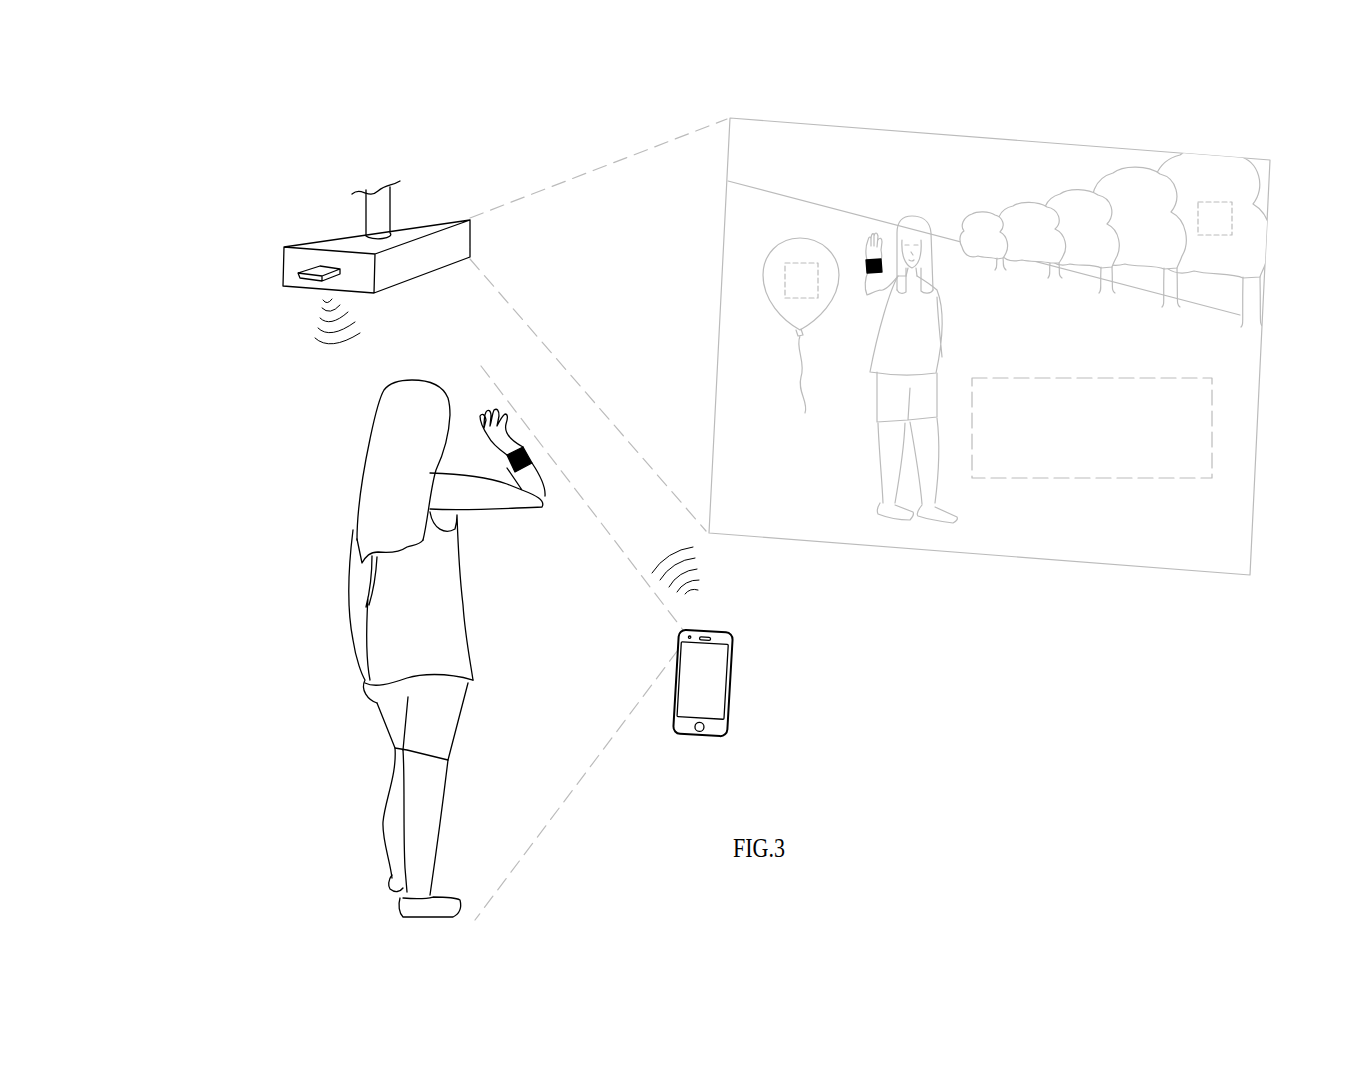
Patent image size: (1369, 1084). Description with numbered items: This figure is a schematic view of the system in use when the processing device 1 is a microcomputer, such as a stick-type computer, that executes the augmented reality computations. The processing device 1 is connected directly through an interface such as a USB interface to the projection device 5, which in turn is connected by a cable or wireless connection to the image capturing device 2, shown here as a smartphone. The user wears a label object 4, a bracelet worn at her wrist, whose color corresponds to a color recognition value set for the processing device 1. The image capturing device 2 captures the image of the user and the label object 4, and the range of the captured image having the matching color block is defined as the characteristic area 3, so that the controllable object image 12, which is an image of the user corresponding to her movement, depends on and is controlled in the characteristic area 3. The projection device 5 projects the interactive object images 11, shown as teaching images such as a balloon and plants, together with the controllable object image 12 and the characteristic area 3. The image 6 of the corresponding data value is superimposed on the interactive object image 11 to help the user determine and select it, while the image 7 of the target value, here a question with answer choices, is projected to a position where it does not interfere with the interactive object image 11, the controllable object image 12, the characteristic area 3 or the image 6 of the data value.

The processing device 1 is at (300, 275).
The image capturing device 2 is at (714, 733).
The characteristic area 3 is at (882, 260).
The label object 4 is at (507, 458).
The projection device 5 is at (313, 240).
The image of the data value 6 is at (785, 280).
The image of the target value 7 is at (1212, 428).
The interactive object image 11 is at (800, 238).
The controllable object image 12 is at (927, 224).